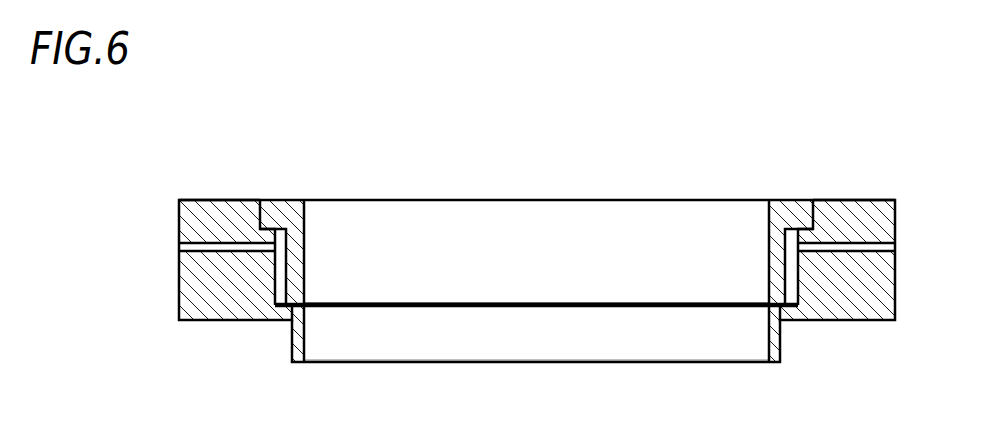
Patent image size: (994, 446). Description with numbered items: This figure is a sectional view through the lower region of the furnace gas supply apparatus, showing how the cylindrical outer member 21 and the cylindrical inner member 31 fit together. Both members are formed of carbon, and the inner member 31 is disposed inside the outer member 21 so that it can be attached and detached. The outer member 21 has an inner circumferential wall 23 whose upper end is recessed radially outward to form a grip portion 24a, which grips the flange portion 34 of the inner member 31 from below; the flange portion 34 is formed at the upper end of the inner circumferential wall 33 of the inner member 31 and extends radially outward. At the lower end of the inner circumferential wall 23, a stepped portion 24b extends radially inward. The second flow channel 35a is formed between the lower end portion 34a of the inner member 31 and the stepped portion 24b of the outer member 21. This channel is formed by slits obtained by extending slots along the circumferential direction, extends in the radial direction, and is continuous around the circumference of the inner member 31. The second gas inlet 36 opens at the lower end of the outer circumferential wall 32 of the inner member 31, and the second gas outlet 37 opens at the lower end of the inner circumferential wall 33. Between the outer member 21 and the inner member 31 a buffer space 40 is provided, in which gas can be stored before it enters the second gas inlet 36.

The outer member 21 is at (203, 205).
The inner member 31 is at (862, 207).
The inner circumferential wall 23 is at (803, 236).
The grip portion 24a is at (262, 234).
The stepped portion 24b is at (513, 343).
The outer circumferential wall 32 is at (285, 272).
The inner circumferential wall 33 is at (304, 246).
The flange portion 34 is at (469, 283).
The lower end portion 34a is at (633, 303).
The second flow channel 35a is at (513, 296).
The second gas inlet 36 is at (287, 307).
The second gas outlet 37 is at (347, 308).
The buffer space 40 is at (792, 278).